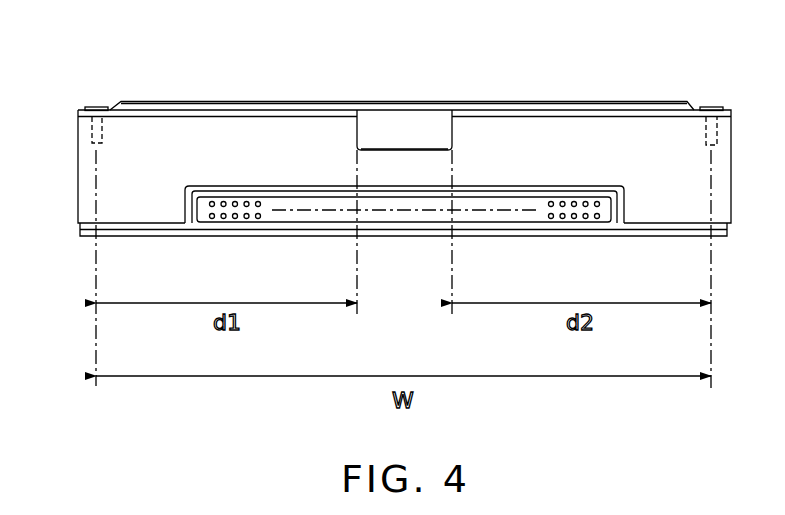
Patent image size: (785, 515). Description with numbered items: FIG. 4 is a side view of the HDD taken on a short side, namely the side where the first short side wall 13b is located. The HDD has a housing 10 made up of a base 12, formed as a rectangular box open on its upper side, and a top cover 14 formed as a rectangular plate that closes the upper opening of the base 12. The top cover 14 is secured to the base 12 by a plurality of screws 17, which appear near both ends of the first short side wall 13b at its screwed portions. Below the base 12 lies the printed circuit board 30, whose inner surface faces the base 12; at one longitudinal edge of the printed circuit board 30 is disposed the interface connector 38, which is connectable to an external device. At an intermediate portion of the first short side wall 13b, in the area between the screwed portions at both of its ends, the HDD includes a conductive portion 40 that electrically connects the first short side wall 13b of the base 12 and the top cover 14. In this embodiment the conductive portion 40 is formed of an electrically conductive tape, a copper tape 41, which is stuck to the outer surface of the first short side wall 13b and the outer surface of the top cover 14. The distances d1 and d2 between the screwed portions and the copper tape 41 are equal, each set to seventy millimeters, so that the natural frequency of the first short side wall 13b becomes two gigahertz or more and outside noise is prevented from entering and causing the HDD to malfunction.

The housing 10 is at (128, 76).
The base 12 is at (77, 170).
The first short side wall 13b is at (626, 133).
The top cover 14 is at (177, 108).
The screws 17 is at (90, 104).
The printed circuit board 30 is at (661, 237).
The interface connector 38 is at (242, 218).
The conductive portion 40 is at (373, 106).
The copper tape 41 is at (425, 125).